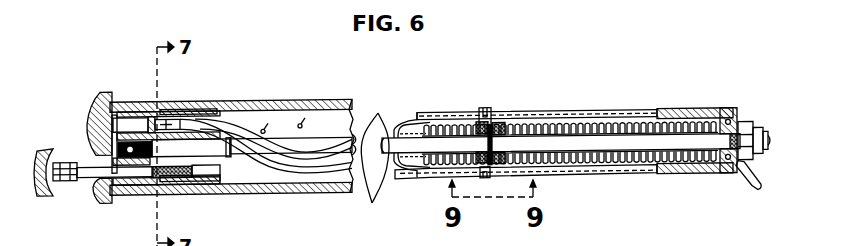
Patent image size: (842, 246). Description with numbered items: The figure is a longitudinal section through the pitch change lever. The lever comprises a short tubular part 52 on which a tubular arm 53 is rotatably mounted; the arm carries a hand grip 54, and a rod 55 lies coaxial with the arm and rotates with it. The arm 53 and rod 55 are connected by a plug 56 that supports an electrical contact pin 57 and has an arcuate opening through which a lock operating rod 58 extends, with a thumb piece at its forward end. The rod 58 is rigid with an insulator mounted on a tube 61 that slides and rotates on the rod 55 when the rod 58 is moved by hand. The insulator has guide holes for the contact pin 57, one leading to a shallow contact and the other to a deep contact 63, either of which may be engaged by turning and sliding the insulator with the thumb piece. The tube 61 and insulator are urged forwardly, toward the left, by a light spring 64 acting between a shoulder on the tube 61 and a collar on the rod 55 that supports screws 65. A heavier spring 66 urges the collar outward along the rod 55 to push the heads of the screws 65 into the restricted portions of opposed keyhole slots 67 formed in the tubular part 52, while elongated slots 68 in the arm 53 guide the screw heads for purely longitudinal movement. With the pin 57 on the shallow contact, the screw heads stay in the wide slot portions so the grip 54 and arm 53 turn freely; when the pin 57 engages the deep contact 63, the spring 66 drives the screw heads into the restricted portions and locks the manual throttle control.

The short tubular part 52 is at (660, 110).
The tubular arm 53 is at (402, 126).
The hand grip 54 is at (302, 193).
The rod 55 is at (555, 124).
The plug 56 is at (100, 173).
The electrical contact pin 57 is at (169, 116).
The lock operating rod 58 is at (86, 168).
The tube 61 is at (375, 169).
The deep contact 63 is at (201, 141).
The light spring 64 is at (460, 127).
The screws 65 is at (487, 111).
The heavier spring 66 is at (573, 122).
The keyhole slots 67 is at (520, 105).
The elongated slots 68 is at (513, 112).